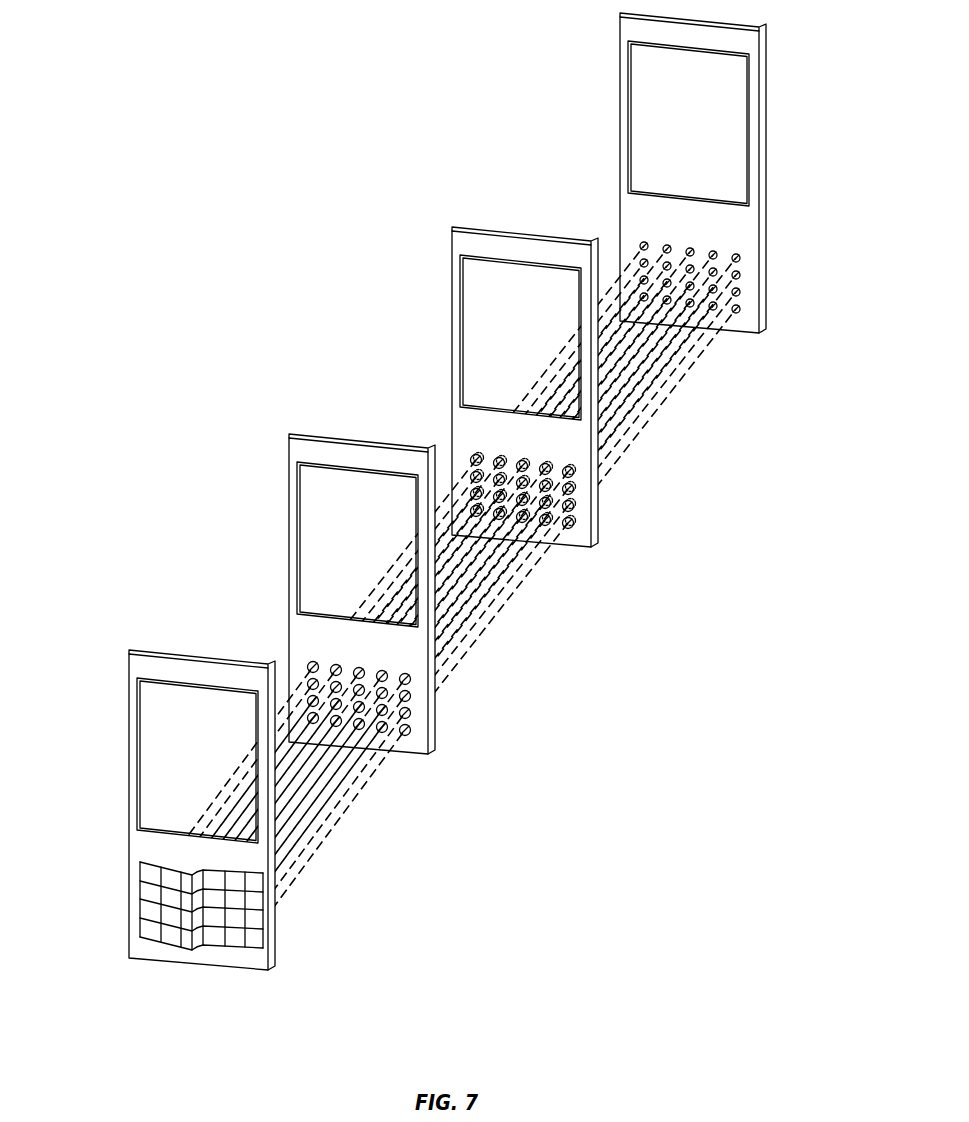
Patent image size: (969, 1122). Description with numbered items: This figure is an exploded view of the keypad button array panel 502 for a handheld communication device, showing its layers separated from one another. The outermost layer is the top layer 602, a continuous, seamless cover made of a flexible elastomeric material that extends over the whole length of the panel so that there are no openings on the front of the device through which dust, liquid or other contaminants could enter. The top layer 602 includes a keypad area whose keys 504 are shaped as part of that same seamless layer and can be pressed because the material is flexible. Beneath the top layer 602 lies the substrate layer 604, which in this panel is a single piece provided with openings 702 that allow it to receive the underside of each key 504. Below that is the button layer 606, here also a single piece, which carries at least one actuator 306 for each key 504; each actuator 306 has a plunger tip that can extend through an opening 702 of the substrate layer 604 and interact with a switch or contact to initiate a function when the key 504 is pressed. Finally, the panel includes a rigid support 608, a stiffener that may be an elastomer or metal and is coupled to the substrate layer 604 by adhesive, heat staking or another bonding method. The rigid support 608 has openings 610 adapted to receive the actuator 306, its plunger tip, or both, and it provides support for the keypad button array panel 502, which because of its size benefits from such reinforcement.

The keypad button array panel 502 is at (300, 69).
The top layer 602 is at (129, 790).
The substrate layer 604 is at (289, 562).
The button layer 606 is at (452, 343).
The rigid support 608 is at (620, 148).
The keys 504 is at (245, 911).
The openings 702 is at (409, 707).
The actuator 306 is at (572, 499).
The openings 610 is at (740, 286).